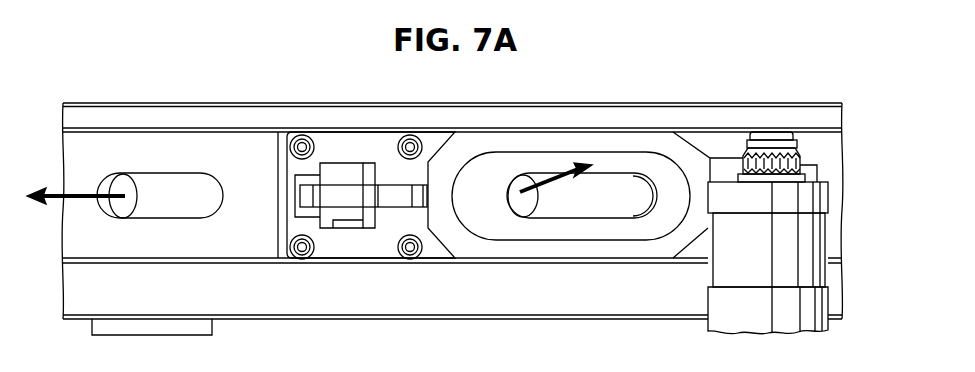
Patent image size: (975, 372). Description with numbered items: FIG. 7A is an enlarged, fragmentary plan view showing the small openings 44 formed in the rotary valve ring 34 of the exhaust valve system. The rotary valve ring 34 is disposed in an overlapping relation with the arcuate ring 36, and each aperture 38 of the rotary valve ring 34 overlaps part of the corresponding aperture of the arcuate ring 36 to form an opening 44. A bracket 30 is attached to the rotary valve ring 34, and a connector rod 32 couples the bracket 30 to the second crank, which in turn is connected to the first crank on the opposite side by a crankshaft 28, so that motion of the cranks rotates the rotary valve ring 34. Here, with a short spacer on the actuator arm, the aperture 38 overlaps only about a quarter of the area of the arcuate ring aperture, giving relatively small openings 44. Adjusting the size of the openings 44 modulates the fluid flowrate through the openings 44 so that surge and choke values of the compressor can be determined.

The crankshaft 28 is at (772, 132).
The bracket 30 is at (328, 140).
The connector rod 32 is at (512, 140).
The rotary valve ring 34 is at (247, 148).
The arcuate ring 36 is at (99, 118).
The aperture 38 is at (170, 187).
The openings 44 is at (118, 188).